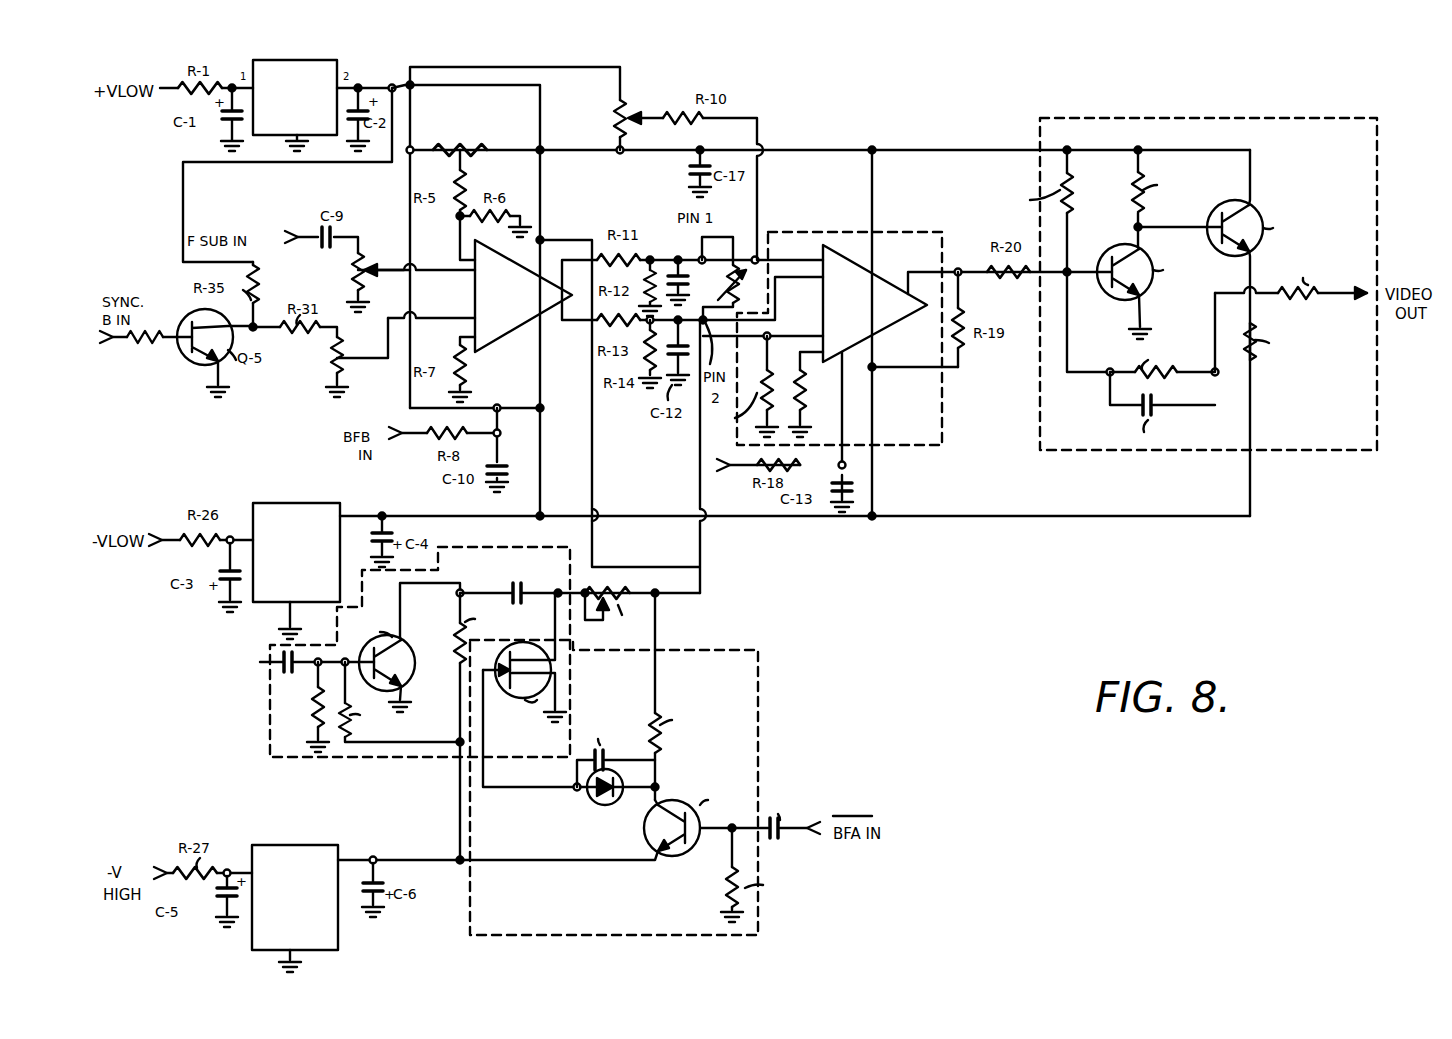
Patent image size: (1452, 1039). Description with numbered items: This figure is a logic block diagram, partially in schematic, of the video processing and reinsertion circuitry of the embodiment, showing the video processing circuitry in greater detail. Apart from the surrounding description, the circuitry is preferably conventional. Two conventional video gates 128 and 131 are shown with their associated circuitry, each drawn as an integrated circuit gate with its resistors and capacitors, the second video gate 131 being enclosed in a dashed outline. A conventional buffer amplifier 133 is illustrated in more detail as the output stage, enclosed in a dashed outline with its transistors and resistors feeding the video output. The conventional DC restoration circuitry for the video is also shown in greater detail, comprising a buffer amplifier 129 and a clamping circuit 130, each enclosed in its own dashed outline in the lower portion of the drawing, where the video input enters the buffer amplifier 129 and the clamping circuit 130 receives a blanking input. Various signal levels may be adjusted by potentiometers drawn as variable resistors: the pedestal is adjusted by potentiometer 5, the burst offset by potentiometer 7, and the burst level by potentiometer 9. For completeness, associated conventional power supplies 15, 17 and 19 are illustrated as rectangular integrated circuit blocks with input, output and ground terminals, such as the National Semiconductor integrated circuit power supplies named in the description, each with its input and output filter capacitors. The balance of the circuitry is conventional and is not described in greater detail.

The potentiometer 5 is at (626, 108).
The potentiometer 7 is at (487, 155).
The potentiometer 9 is at (362, 252).
The power supply 15 is at (337, 60).
The power supply 17 is at (337, 503).
The power supply 19 is at (338, 845).
The video gate 128 is at (520, 327).
The buffer amplifier 129 is at (490, 547).
The clamping circuit 130 is at (745, 650).
The video gate 131 is at (880, 282).
The buffer amplifier 133 is at (1380, 152).